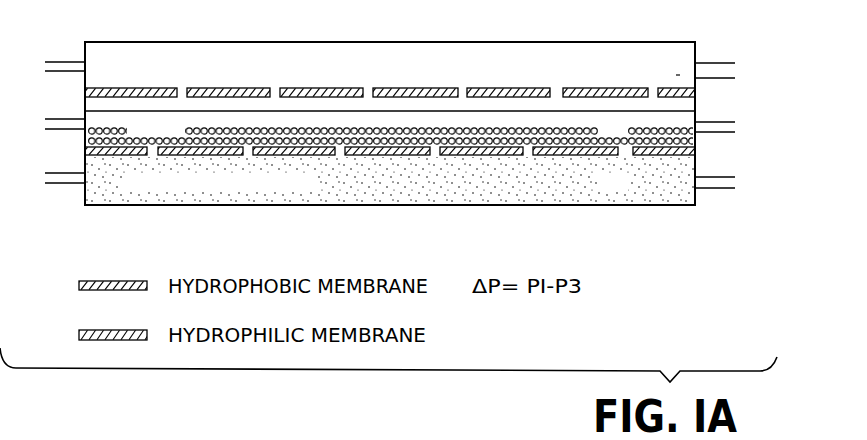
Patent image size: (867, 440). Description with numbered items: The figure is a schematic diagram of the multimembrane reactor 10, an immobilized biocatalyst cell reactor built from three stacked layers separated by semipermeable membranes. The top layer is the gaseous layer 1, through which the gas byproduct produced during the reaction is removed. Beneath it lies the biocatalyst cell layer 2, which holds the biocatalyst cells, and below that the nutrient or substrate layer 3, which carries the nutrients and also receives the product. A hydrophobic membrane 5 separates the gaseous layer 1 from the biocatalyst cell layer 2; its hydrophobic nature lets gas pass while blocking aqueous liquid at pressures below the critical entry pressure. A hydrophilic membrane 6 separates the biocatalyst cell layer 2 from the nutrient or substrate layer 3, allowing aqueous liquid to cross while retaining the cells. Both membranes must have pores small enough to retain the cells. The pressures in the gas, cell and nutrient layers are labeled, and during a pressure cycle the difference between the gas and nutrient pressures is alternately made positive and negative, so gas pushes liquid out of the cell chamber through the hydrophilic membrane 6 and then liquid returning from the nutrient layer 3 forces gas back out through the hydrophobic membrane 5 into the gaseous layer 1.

The gaseous layer 1 is at (228, 50).
The biocatalyst cell layer 2 is at (383, 130).
The nutrient or substrate layer 3 is at (452, 173).
The hydrophobic membrane 5 is at (695, 95).
The hydrophilic membrane 6 is at (695, 153).
The multimembrane reactor 10 is at (587, 43).